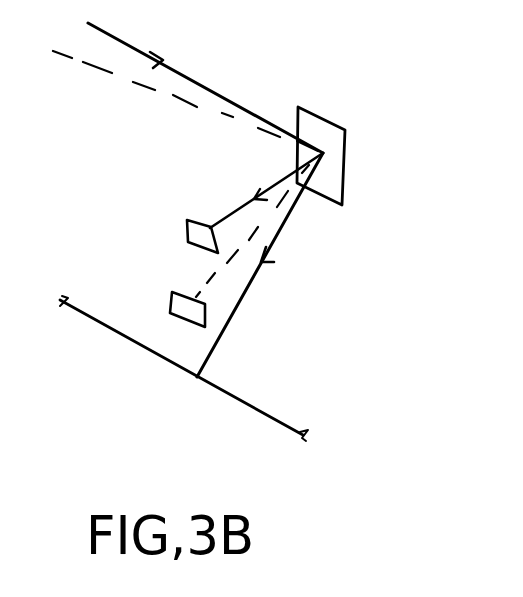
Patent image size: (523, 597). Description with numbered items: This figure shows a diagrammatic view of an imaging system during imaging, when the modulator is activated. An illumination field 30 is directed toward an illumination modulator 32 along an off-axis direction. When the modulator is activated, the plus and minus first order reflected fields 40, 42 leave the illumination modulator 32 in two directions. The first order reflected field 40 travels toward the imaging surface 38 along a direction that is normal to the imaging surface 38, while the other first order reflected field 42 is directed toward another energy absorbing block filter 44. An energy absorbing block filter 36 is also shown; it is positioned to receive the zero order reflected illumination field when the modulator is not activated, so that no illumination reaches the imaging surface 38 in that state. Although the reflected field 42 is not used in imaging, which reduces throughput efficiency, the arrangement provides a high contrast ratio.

The illumination field 30 is at (203, 86).
The illumination modulator 32 is at (322, 115).
The energy absorbing block filter 36 is at (172, 299).
The imaging surface 38 is at (148, 350).
The first order reflected field 40 is at (245, 293).
The first order reflected field 42 is at (236, 208).
The energy absorbing block filter 44 is at (190, 224).